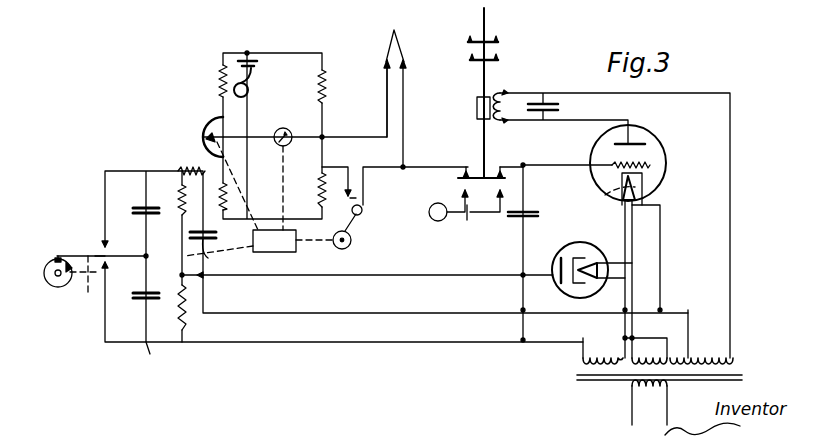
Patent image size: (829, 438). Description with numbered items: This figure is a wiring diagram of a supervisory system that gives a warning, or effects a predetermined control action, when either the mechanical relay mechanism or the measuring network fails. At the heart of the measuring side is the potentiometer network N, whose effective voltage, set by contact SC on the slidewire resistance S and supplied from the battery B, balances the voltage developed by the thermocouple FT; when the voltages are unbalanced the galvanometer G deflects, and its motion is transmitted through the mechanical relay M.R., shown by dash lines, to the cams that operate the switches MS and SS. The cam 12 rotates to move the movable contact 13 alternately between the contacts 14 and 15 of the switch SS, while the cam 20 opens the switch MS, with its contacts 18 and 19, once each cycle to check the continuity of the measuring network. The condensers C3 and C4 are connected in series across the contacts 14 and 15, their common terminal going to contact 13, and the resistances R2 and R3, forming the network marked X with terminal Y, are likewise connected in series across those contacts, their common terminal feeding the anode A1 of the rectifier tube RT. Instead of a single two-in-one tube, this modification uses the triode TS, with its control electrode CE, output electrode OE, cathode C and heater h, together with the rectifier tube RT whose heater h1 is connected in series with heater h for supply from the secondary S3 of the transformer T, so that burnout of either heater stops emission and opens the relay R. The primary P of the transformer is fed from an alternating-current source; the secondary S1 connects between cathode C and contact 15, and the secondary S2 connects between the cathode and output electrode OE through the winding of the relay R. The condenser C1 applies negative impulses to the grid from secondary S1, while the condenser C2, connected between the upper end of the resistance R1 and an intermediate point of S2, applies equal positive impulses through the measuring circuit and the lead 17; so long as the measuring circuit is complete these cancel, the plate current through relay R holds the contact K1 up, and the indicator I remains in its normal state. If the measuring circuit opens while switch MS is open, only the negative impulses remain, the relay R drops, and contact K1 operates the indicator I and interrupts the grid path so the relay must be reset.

The cam 12 is at (60, 287).
The movable contact 13 is at (89, 292).
The contact 14 is at (117, 246).
The contact 15 is at (108, 264).
The lead 17 is at (438, 172).
The contact of switch MS 18 is at (352, 210).
The contact of switch MS 19 is at (356, 232).
The cam 20 is at (362, 209).
The selector network X is at (396, 247).
The network terminal Y is at (152, 356).
The condenser C3 is at (135, 200).
The condenser C4 is at (135, 310).
The resistance R1 is at (189, 170).
The resistance R2 is at (191, 223).
The resistance R3 is at (185, 315).
The condenser C2 is at (210, 258).
The switch SS is at (102, 249).
The measuring network N is at (298, 84).
The battery B is at (250, 79).
The galvanometer G is at (287, 128).
The contact SC is at (219, 137).
The slidewire resistance S is at (209, 117).
The mechanical relay M.R. is at (259, 199).
The switch MS is at (363, 190).
The thermocouple FT is at (398, 45).
The relay contact K1 is at (474, 167).
The indicator I is at (466, 205).
The relay R is at (507, 92).
The triode TS is at (665, 140).
The output electrode OE is at (637, 142).
The control electrode CE is at (610, 162).
The heater h is at (644, 182).
The cathode C is at (608, 195).
The condenser C1 is at (533, 206).
The rectifier tube RT is at (584, 233).
The anode A1 is at (560, 256).
The heater h1 is at (600, 262).
The secondary S1 is at (598, 352).
The secondary S2 is at (705, 353).
The secondary S3 is at (648, 352).
The transformer T is at (740, 383).
The primary P is at (630, 410).